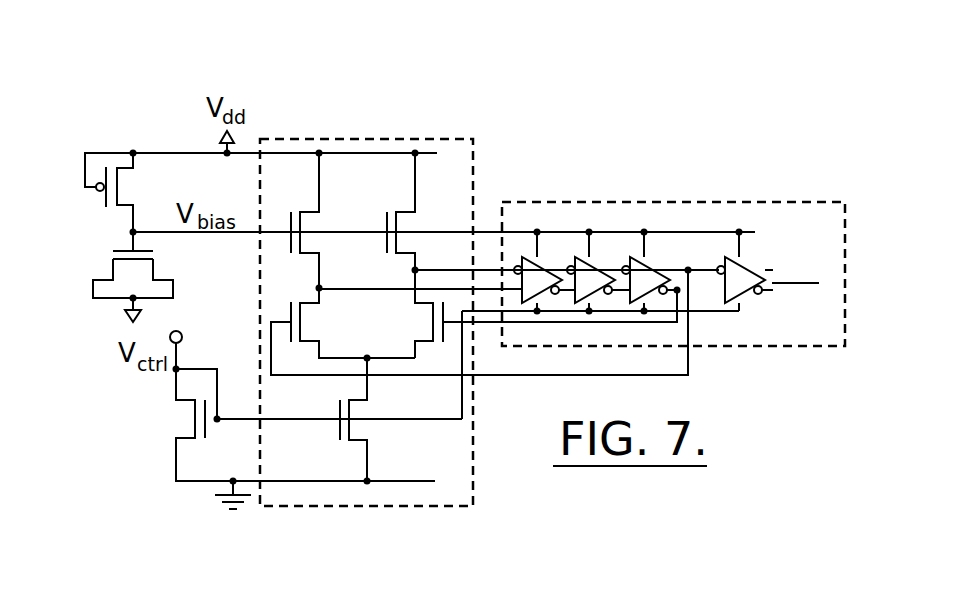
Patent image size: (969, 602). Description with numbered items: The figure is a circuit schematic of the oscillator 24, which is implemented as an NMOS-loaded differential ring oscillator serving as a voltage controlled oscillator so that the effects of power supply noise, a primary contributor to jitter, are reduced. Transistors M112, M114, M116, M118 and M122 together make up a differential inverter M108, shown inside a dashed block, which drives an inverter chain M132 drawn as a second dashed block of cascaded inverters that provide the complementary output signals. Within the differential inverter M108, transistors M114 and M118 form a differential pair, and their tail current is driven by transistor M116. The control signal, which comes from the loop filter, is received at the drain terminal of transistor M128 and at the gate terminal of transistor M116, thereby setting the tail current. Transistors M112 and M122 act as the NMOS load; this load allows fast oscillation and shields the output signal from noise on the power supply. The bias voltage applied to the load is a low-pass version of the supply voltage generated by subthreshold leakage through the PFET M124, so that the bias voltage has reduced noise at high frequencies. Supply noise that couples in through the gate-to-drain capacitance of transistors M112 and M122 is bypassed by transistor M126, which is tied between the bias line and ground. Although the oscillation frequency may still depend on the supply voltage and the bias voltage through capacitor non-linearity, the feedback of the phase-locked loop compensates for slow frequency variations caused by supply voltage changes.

The oscillator 24 is at (606, 139).
The differential inverter M108 is at (437, 139).
The inverter chain M132 is at (738, 202).
The PFET M124 is at (140, 194).
The transistor M126 is at (158, 277).
The transistor M128 is at (292, 438).
The transistor M112 is at (328, 222).
The transistor M122 is at (424, 220).
The transistor M114 is at (481, 321).
The transistor M118 is at (535, 323).
The transistor M116 is at (333, 421).